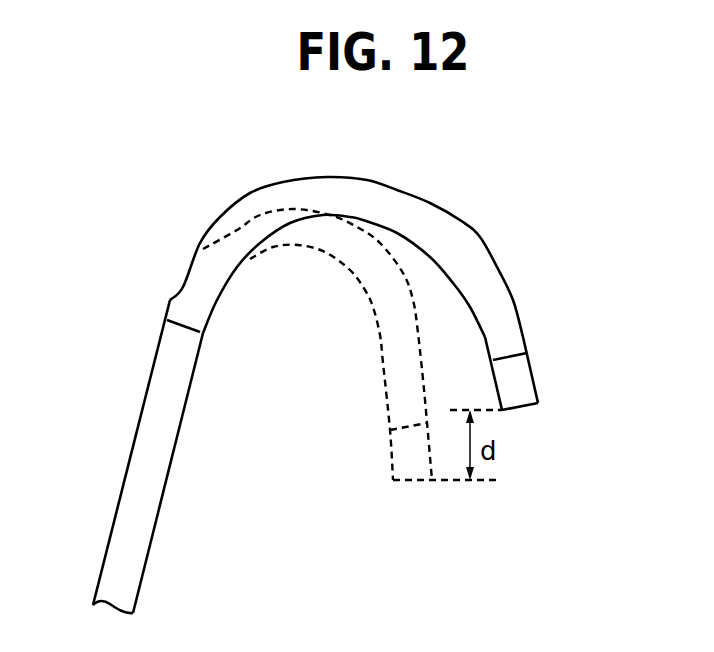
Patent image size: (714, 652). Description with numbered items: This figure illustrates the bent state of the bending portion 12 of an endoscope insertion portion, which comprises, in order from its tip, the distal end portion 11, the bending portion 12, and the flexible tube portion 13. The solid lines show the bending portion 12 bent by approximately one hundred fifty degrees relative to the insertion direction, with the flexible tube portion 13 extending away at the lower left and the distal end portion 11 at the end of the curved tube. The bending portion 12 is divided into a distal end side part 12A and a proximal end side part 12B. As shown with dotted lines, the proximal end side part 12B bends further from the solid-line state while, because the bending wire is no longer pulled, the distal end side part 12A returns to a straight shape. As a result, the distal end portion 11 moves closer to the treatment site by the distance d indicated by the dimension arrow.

The distal end portion 11 is at (531, 372).
The bending portion 12 is at (461, 218).
The distal end side part 12A is at (380, 358).
The proximal end side part 12B is at (302, 248).
The flexible tube portion 13 is at (130, 462).